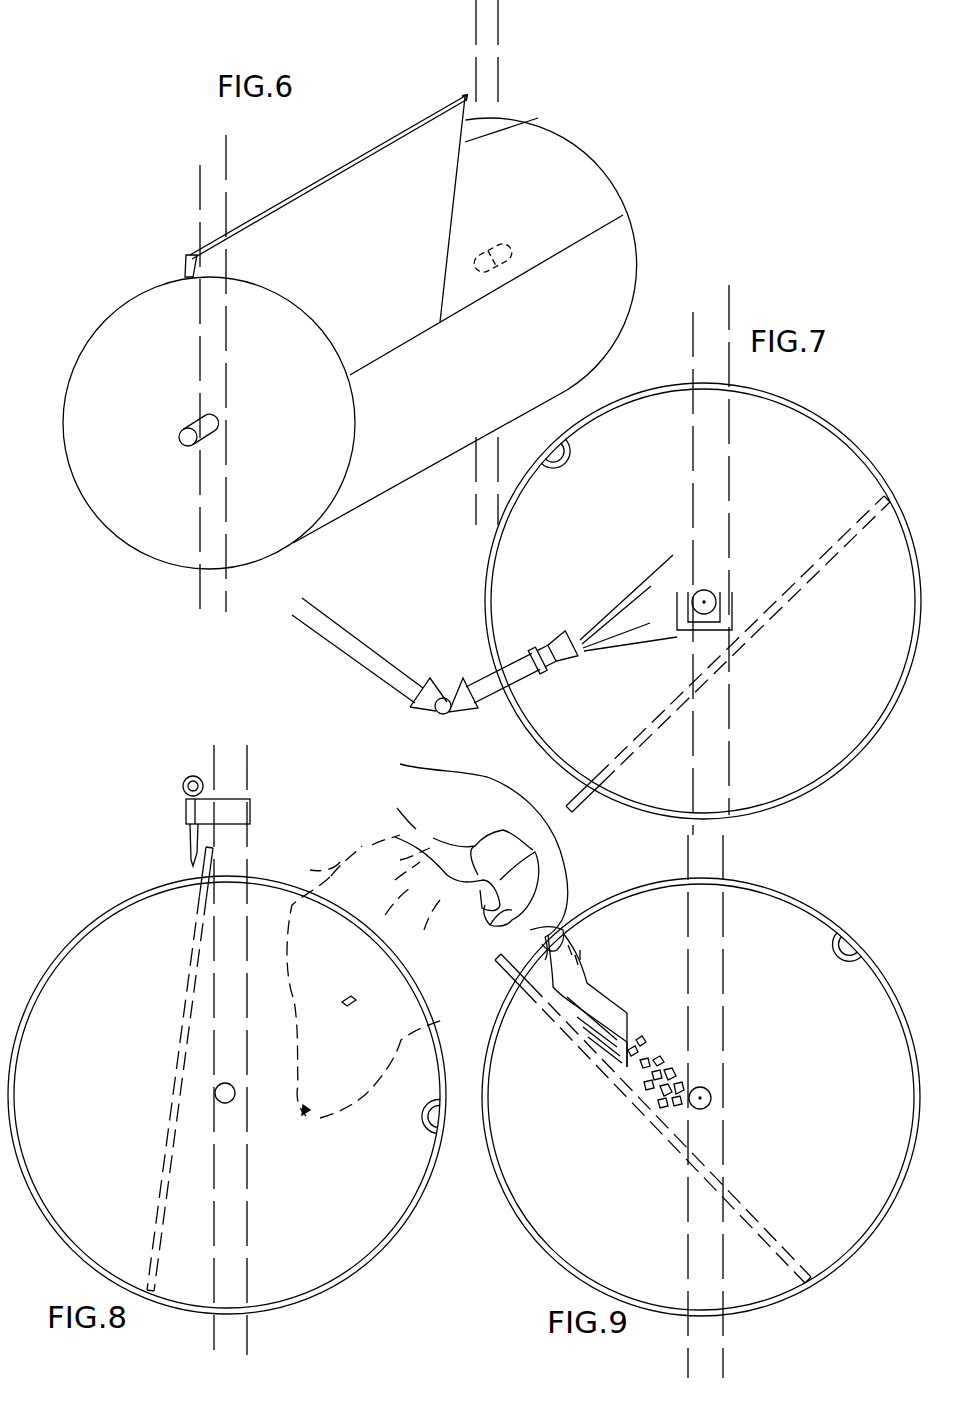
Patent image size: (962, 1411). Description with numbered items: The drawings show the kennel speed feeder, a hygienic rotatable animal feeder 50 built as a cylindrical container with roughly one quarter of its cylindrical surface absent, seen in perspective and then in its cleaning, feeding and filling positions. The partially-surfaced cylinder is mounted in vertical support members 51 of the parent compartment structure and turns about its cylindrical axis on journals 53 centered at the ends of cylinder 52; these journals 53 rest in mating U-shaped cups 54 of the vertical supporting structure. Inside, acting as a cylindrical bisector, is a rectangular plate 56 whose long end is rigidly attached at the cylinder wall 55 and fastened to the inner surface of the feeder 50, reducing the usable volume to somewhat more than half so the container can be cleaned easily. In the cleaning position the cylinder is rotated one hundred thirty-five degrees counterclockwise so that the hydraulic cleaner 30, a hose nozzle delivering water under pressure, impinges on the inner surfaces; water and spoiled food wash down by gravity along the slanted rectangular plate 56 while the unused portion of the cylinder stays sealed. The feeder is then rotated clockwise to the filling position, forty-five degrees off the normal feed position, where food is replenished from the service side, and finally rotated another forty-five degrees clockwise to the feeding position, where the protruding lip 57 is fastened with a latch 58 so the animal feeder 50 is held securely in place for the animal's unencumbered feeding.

In FIG. 7, the hydraulic cleaner 30 is at (563, 640).
In FIG. 6, the animal feeder 50 is at (486, 378).
In FIG. 7, the vertical support members 51 is at (730, 308).
In FIG. 6, the ends of cylinder 52 is at (302, 441).
In FIG. 6, the journals 53 is at (180, 433).
In FIG. 7, the journals 53 is at (711, 592).
In FIG. 7, the U-shaped cups 54 is at (730, 596).
In FIG. 6, the cylinder wall 55 is at (515, 121).
In FIG. 6, the rectangular plate 56 is at (362, 248).
In FIG. 7, the rectangular plate 56 is at (647, 722).
In FIG. 6, the protruding lip 57 is at (185, 265).
In FIG. 8, the protruding lip 57 is at (200, 868).
In FIG. 8, the latch 58 is at (190, 838).